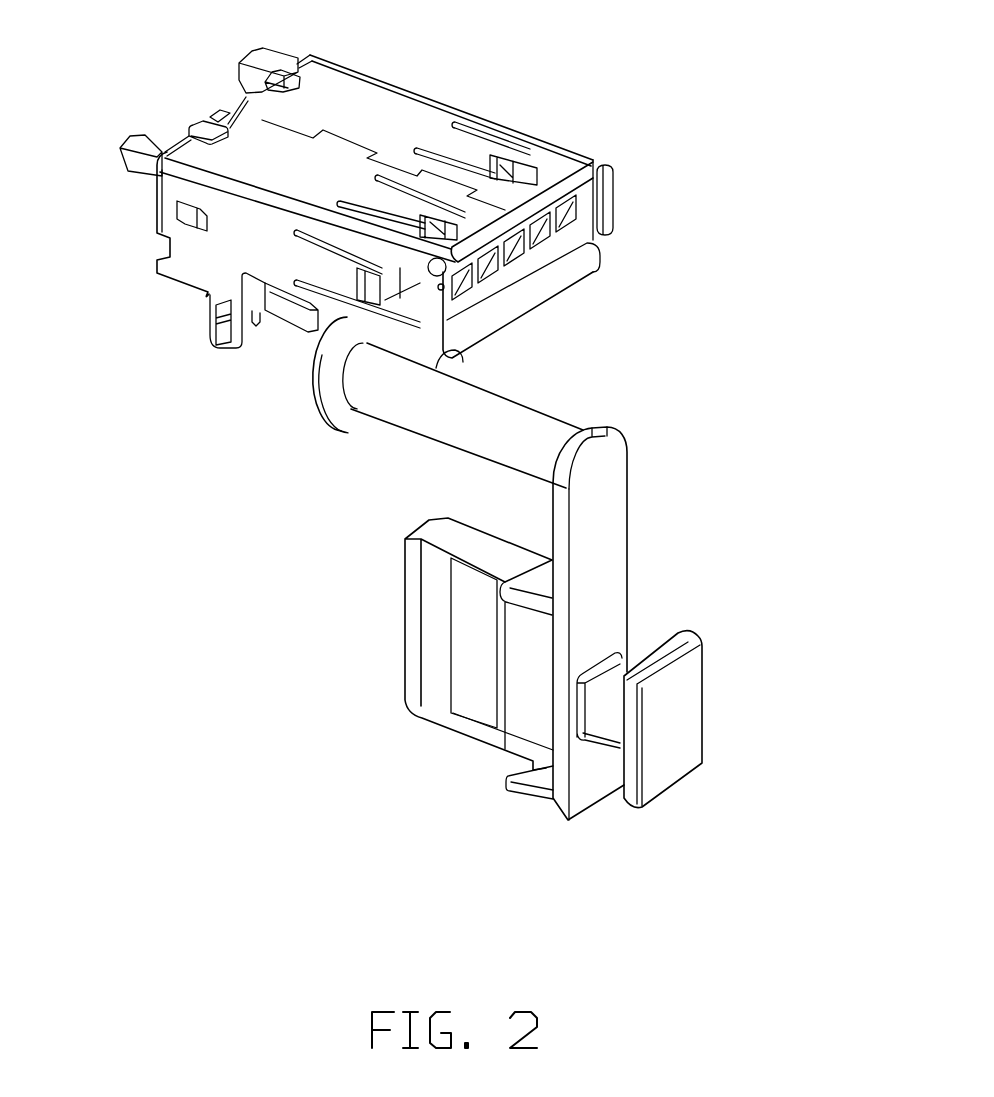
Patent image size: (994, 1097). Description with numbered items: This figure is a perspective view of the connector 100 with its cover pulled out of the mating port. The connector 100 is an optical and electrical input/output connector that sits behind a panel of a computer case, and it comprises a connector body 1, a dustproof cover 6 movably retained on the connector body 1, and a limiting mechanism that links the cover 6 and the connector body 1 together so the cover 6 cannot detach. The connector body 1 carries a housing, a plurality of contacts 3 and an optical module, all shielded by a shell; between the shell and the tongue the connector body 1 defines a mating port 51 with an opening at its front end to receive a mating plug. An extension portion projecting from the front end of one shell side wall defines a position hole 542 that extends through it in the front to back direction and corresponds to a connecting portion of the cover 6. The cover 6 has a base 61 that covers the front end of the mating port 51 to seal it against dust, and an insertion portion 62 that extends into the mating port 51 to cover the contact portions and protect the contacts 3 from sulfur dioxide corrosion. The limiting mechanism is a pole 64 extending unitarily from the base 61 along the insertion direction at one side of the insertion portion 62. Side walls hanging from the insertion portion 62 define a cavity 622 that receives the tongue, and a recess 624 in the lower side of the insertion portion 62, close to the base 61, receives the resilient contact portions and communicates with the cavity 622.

The connector 100 is at (548, 80).
The connector body 1 is at (360, 100).
The contacts 3 is at (528, 242).
The mating port 51 is at (567, 200).
The position hole 542 is at (341, 431).
The pole 64 is at (505, 425).
The base 61 is at (602, 610).
The insertion portion 62 is at (442, 705).
The recess 624 is at (523, 708).
The cavity 622 is at (540, 781).
The dustproof cover 6 is at (678, 695).